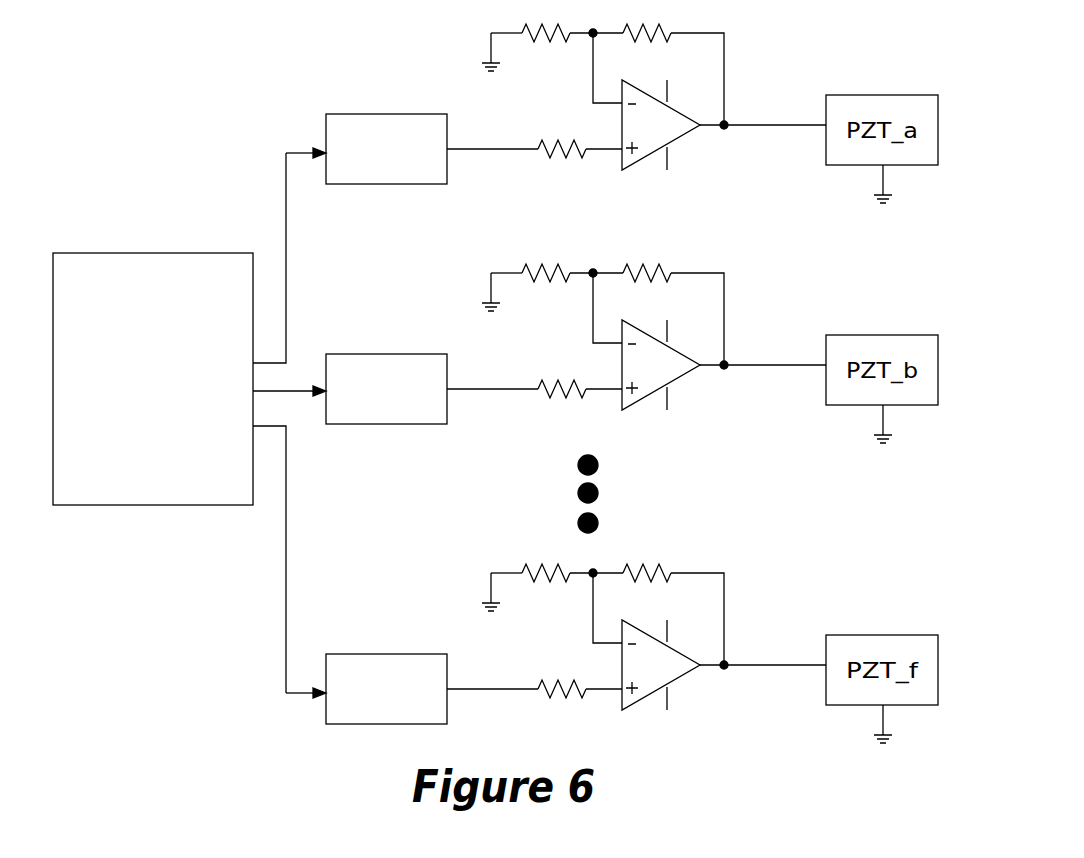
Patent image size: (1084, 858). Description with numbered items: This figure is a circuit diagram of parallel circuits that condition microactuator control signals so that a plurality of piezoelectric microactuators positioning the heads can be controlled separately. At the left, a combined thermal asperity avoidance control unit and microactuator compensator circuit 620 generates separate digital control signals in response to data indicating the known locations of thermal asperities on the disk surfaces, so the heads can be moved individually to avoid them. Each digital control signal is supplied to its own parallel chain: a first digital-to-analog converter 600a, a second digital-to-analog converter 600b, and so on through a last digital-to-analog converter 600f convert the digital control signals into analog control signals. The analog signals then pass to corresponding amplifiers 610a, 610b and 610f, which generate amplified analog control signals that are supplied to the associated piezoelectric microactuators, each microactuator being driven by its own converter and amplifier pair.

The combined thermal asperity avoidance control unit and microactuator compensator c 620 is at (153, 379).
The digital-to-analog converter 600a is at (360, 114).
The digital-to-analog converter 600b is at (360, 354).
The digital-to-analog converter 600f is at (360, 654).
The amplifier 610a is at (683, 138).
The amplifier 610b is at (683, 378).
The amplifier 610f is at (683, 678).